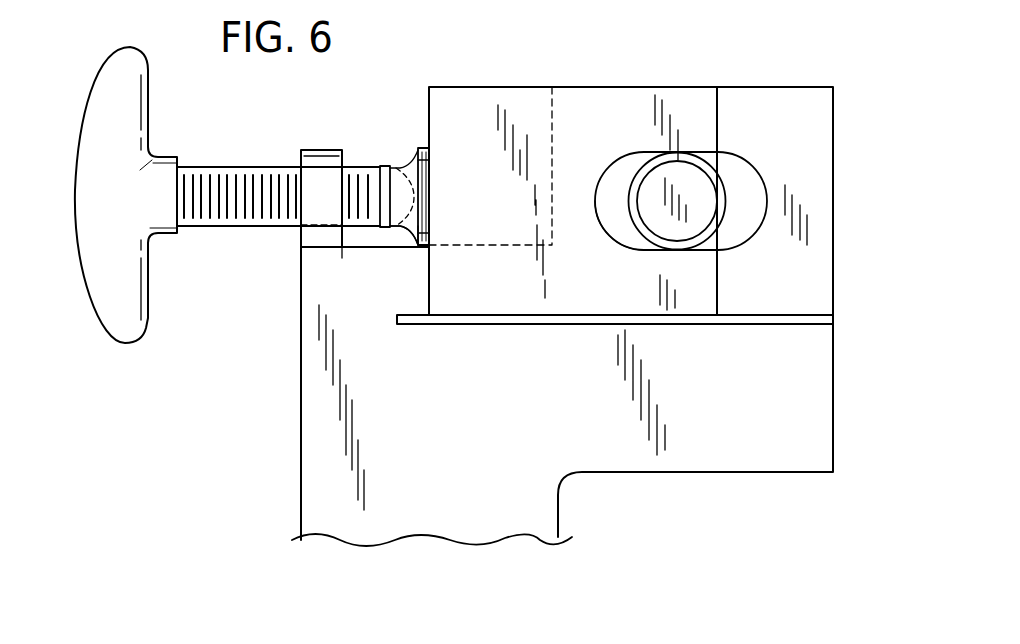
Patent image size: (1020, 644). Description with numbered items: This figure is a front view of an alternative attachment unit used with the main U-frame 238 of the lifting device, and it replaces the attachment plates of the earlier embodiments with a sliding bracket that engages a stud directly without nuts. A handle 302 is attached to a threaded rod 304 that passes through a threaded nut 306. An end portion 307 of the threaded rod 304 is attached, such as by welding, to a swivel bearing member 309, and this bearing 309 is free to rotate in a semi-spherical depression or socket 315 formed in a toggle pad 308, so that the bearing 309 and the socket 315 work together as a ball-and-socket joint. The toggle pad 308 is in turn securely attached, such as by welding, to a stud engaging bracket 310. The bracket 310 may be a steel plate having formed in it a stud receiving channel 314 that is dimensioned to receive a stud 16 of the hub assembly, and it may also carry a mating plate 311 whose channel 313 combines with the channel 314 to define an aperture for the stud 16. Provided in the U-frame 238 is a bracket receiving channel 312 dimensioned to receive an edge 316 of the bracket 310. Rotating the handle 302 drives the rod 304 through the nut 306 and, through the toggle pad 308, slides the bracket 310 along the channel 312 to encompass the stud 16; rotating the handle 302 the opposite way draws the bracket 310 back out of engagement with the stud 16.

The handle 302 is at (130, 343).
The threaded rod 304 is at (234, 227).
The threaded nut 306 is at (318, 149).
The end portion 307 is at (381, 166).
The toggle pad 308 is at (429, 223).
The swivel bearing member 309 is at (376, 223).
The stud engaging bracket 310 is at (610, 100).
The mating plate 311 is at (758, 102).
The bracket receiving channel 312 is at (453, 325).
The channel 313 is at (743, 158).
The stud receiving channel 314 is at (603, 230).
The socket 315 is at (406, 150).
The edge 316 is at (813, 315).
The stud 16 is at (720, 222).
The U-frame 238 is at (322, 460).